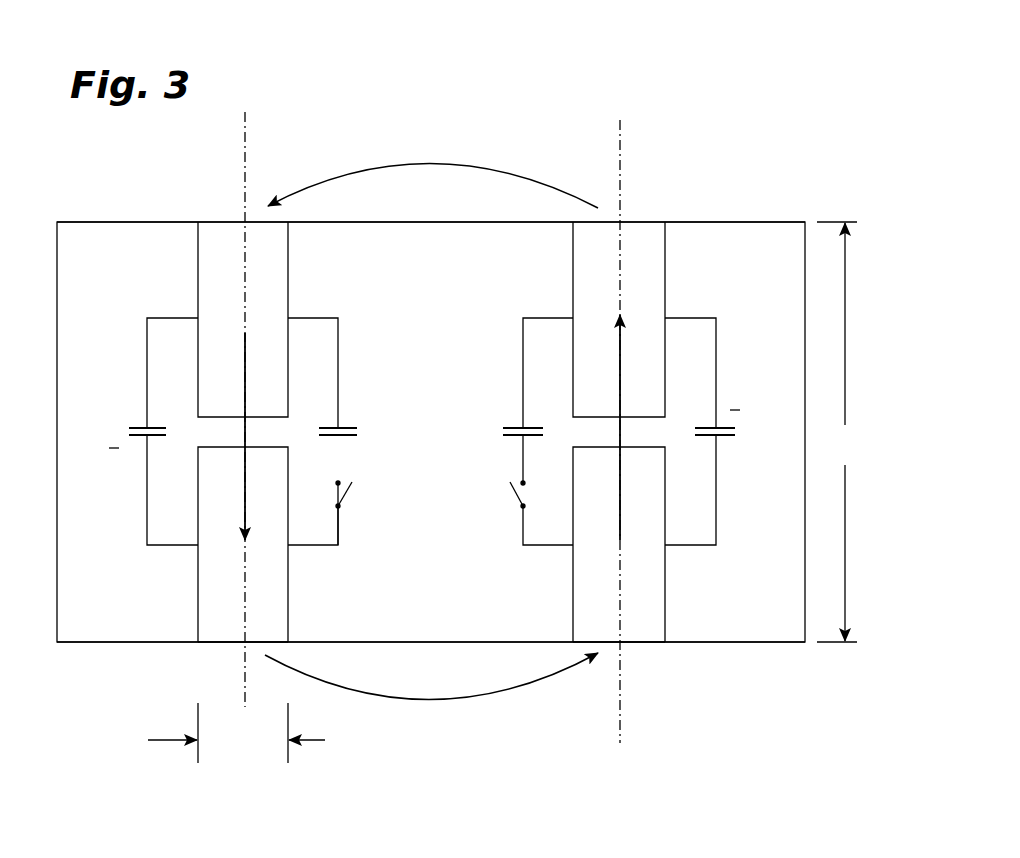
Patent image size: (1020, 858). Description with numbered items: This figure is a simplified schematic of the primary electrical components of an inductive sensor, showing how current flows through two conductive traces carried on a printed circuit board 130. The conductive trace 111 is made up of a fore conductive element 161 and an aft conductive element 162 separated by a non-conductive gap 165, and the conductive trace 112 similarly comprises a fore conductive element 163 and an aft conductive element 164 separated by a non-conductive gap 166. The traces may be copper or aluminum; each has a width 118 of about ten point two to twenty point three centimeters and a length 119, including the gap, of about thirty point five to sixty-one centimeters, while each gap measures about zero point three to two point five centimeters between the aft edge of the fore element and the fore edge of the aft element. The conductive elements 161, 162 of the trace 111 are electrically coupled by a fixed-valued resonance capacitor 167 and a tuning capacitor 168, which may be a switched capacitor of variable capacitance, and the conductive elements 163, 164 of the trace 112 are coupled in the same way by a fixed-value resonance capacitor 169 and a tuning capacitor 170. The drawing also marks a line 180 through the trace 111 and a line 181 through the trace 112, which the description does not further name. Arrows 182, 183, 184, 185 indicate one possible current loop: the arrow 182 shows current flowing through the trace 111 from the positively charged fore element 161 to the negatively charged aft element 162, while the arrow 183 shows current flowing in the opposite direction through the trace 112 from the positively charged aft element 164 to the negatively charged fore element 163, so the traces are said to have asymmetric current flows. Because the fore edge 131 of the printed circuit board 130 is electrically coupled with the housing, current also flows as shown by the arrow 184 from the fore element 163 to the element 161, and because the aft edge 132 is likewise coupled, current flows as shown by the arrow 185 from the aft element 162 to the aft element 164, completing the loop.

The conductive trace 111 is at (225, 652).
The conductive trace 112 is at (637, 653).
The width 118 is at (236, 733).
The length 119 is at (842, 432).
The printed circuit board 130 is at (399, 598).
The fore edge 131 is at (128, 222).
The aft edge 132 is at (82, 642).
The fore conductive element 161 is at (224, 267).
The aft conductive element 162 is at (224, 619).
The fore conductive element 163 is at (599, 267).
The aft conductive element 164 is at (599, 619).
The non-conductive gap 165 is at (265, 427).
The non-conductive gap 166 is at (632, 432).
The fixed-valued resonance capacitor 167 is at (140, 443).
The tuning capacitor 168 is at (345, 422).
The fixed-value resonance capacitor 169 is at (738, 413).
The tuning capacitor 170 is at (503, 440).
The first axis 180 is at (245, 132).
The second axis 181 is at (620, 140).
The arrow 182 is at (240, 487).
The arrow 183 is at (620, 500).
The arrow 184 is at (478, 165).
The arrow 185 is at (480, 701).